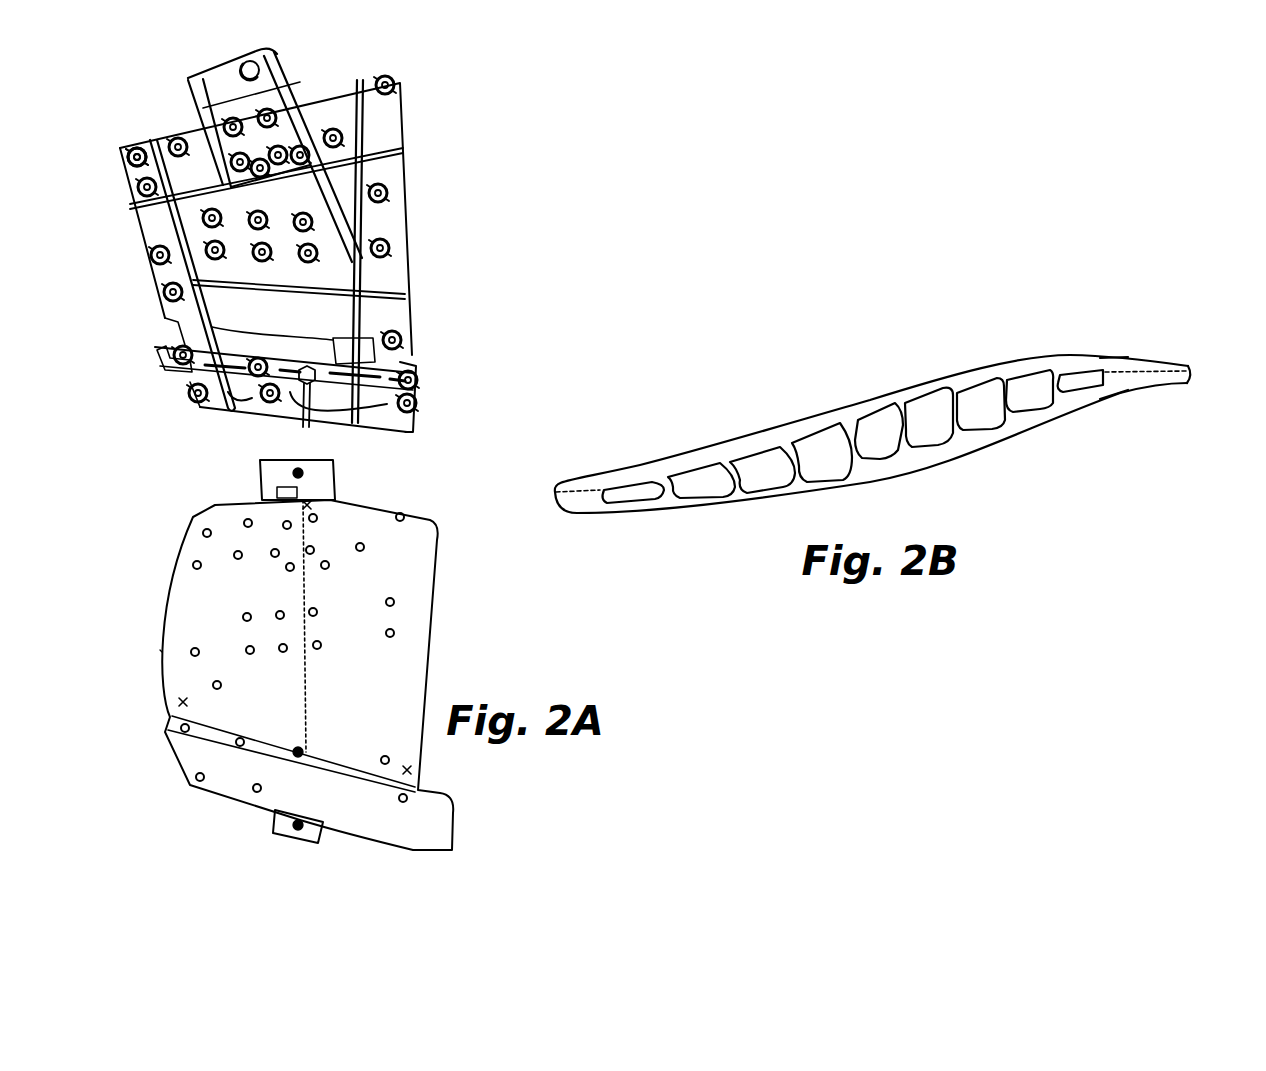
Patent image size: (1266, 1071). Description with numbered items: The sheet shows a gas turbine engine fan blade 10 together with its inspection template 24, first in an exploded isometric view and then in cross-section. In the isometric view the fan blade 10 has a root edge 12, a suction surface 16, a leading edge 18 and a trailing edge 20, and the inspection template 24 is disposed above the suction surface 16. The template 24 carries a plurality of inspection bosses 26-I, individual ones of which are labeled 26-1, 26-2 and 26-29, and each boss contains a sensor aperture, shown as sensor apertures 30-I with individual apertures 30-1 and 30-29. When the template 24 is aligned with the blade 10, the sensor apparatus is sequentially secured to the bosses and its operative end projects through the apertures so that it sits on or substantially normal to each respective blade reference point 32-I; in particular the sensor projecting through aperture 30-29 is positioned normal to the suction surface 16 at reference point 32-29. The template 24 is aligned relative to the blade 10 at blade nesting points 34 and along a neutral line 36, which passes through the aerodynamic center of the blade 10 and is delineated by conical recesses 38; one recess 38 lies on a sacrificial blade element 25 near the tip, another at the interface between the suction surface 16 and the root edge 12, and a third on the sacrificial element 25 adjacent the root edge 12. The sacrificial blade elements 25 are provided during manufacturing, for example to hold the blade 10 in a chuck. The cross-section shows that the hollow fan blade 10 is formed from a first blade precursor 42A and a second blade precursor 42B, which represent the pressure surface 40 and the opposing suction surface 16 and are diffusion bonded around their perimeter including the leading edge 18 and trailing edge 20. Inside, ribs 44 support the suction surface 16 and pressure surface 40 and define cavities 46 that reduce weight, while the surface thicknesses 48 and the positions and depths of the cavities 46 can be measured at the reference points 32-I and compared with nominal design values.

In FIG. 2A, the fan blade 10 is at (118, 552).
In FIG. 2B, the fan blade 10 is at (1188, 338).
In FIG. 2A, the root edge 12 is at (428, 820).
In FIG. 2B, the suction surface 16 is at (906, 386).
In FIG. 2B, the leading edge 18 is at (552, 496).
In FIG. 2B, the trailing edge 20 is at (1192, 375).
In FIG. 2A, the inspection template 24 is at (436, 126).
In FIG. 2A, the sacrificial blade elements 25 is at (250, 469).
In FIG. 2A, the inspection boss 26-1 is at (137, 150).
In FIG. 2A, the inspection boss 26-2 is at (178, 140).
In FIG. 2A, the inspection bosses 26-I is at (188, 211).
In FIG. 2A, the inspection boss 26-29 is at (428, 392).
In FIG. 2A, the sensor aperture 30-1 is at (128, 158).
In FIG. 2A, the sensor apertures 30-I is at (304, 264).
In FIG. 2A, the sensor aperture 30-29 is at (416, 403).
In FIG. 2A, the blade reference points 32-I is at (278, 610).
In FIG. 2A, the blade reference point 32-29 is at (410, 798).
In FIG. 2A, the blade nesting points 34 is at (312, 508).
In FIG. 2A, the neutral line 36 is at (306, 588).
In FIG. 2A, the recesses 38 is at (298, 473).
In FIG. 2B, the pressure surface 40 is at (965, 457).
In FIG. 2B, the first blade precursor 42A is at (1114, 350).
In FIG. 2B, the second blade precursor 42B is at (1114, 402).
In FIG. 2B, the ribs 44 is at (840, 412).
In FIG. 2B, the cavities 46 is at (904, 423).
In FIG. 2B, the surface thicknesses 48 is at (748, 441).